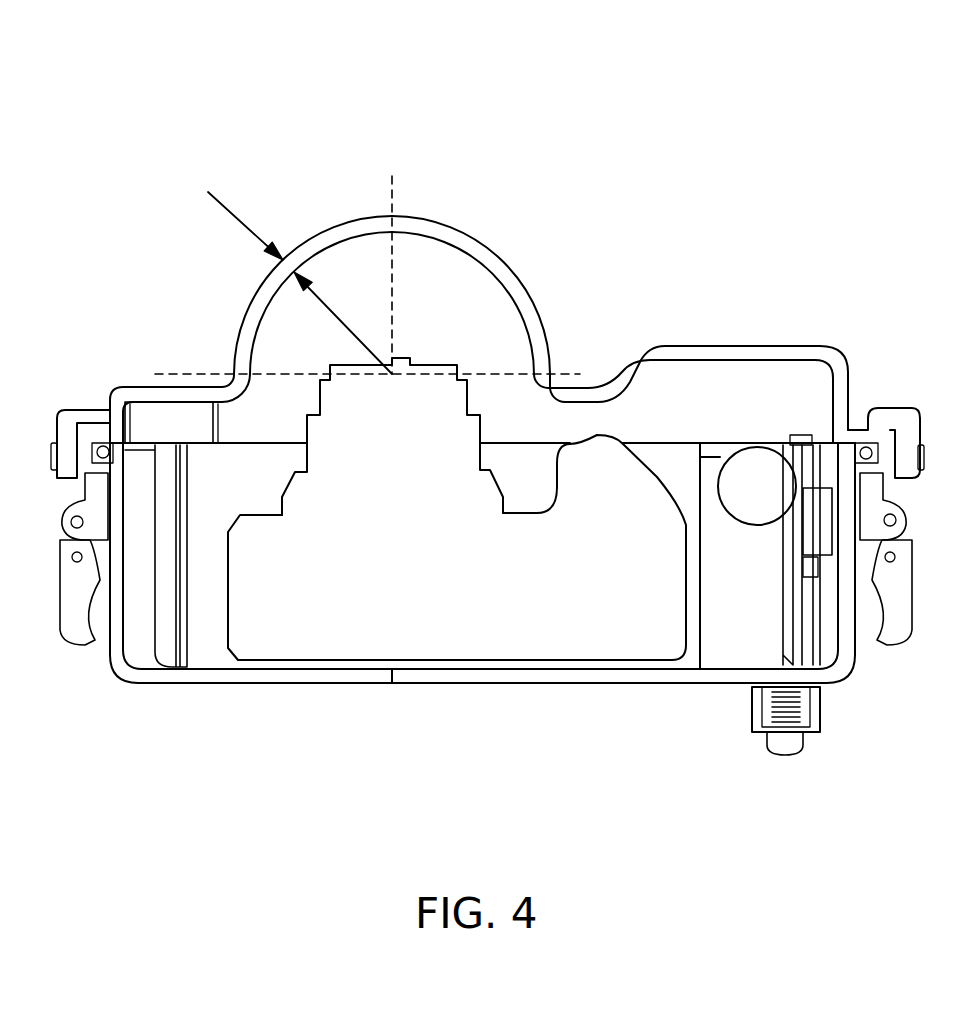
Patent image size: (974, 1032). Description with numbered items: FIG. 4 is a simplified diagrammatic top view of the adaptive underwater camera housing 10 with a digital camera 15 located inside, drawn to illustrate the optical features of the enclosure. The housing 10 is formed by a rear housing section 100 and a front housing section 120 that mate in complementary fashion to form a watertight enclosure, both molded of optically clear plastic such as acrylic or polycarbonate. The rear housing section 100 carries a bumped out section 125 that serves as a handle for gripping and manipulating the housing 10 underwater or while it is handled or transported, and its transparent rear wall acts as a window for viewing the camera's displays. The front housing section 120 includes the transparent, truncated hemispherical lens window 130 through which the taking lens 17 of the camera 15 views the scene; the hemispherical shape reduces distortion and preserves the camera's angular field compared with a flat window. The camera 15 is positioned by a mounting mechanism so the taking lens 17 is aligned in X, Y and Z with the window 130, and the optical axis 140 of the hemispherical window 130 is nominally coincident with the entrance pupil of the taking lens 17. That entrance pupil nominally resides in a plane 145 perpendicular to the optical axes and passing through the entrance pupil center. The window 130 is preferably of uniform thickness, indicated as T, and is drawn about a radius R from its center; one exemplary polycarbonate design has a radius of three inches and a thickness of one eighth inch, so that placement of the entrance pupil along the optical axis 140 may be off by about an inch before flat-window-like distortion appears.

The adaptive underwater camera housing 10 is at (650, 82).
The digital camera 15 is at (308, 640).
The taking lens 17 is at (330, 367).
The rear housing section 100 is at (537, 695).
The front housing section 120 is at (690, 320).
The bumped out section 125 is at (767, 345).
The hemispherical lens window 130 is at (232, 280).
The optical axis 140 is at (392, 195).
The plane 145 is at (480, 372).
The dome radius R is at (337, 316).
The dome wall thickness T is at (236, 218).